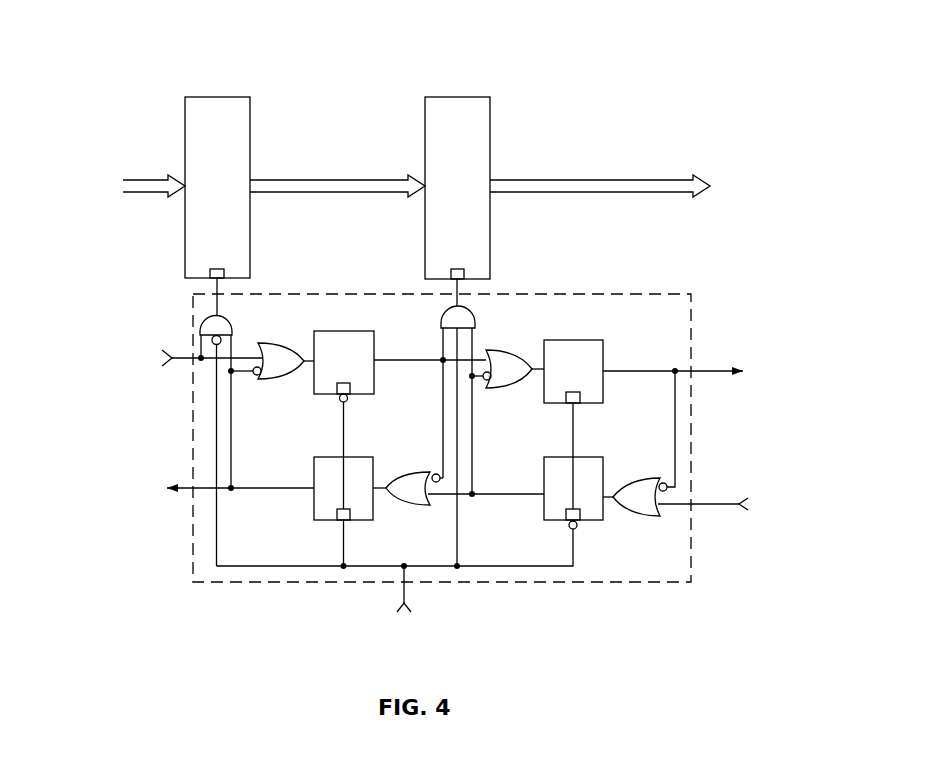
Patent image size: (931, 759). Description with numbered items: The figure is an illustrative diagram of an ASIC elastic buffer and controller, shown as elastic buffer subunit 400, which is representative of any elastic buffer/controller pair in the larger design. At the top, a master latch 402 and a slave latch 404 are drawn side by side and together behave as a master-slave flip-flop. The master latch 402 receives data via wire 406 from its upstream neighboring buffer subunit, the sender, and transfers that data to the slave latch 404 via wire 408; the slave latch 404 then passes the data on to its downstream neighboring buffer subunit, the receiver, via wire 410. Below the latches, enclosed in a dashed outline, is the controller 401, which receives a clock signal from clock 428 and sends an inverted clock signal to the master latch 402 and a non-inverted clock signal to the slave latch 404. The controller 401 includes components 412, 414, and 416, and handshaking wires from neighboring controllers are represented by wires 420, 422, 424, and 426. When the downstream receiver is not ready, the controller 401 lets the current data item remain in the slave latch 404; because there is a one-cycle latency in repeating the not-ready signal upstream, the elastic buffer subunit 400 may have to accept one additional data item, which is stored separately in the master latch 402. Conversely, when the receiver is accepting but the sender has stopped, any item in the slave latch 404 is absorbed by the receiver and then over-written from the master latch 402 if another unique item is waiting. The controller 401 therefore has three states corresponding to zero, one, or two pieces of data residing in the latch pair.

The elastic buffer subunit 400 is at (124, 30).
The controller 401 is at (347, 292).
The master latch 402 is at (245, 96).
The slave latch 404 is at (485, 96).
The wire 406 is at (140, 177).
The wire 408 is at (355, 178).
The wire 410 is at (577, 178).
The component 412 is at (345, 330).
The component 414 is at (330, 456).
The component 416 is at (575, 340).
The handshaking wire 420 is at (187, 355).
The handshaking wire 422 is at (188, 483).
The handshaking wire 424 is at (700, 368).
The handshaking wire 426 is at (702, 503).
The clock 428 is at (560, 457).